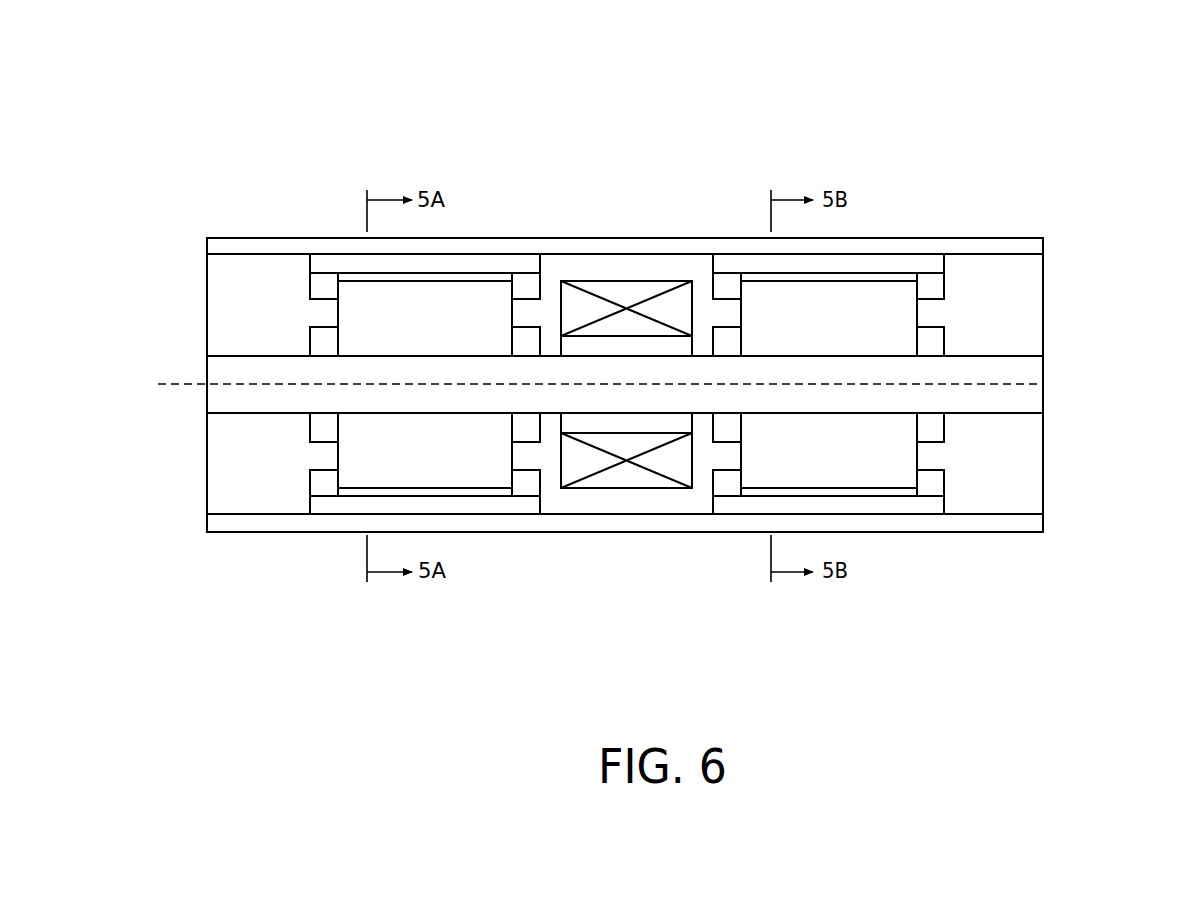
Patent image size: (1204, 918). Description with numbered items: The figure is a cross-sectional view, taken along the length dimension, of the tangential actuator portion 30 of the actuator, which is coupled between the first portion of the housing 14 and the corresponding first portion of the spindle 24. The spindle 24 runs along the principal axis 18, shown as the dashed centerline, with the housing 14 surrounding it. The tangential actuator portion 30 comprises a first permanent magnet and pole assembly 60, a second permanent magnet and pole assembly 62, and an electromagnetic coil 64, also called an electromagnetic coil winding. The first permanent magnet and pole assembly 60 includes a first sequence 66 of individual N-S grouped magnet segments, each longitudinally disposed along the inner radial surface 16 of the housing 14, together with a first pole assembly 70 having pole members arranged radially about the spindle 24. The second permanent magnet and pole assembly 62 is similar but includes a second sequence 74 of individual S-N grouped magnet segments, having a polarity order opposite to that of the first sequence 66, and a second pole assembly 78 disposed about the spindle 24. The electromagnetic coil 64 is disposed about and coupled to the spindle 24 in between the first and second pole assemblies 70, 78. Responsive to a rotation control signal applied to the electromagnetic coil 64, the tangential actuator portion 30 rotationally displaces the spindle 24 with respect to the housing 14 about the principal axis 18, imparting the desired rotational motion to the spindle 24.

The tangential actuator portion 30 is at (319, 226).
The housing 14 is at (667, 250).
The inner radial surface 16 is at (1024, 514).
The principal axis 18 is at (173, 383).
The spindle 24 is at (1025, 372).
The first pole assembly 70 is at (493, 297).
The second pole assembly 78 is at (893, 297).
The first permanent magnet and pole assembly 60 is at (476, 541).
The second permanent magnet and pole assembly 62 is at (884, 541).
The electromagnetic coil 64 is at (633, 480).
The first sequence 66 is at (338, 505).
The second sequence 74 is at (930, 505).